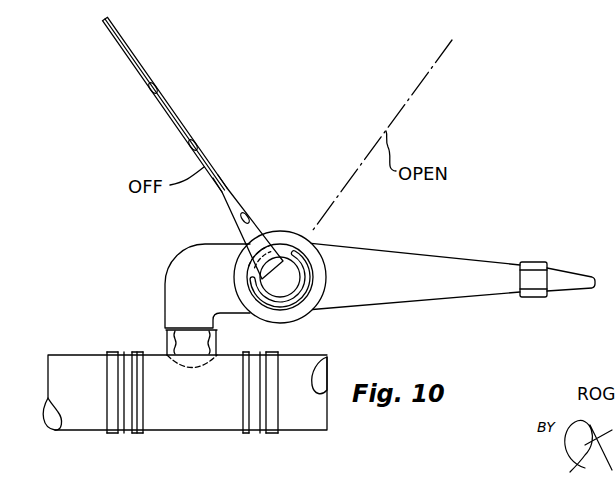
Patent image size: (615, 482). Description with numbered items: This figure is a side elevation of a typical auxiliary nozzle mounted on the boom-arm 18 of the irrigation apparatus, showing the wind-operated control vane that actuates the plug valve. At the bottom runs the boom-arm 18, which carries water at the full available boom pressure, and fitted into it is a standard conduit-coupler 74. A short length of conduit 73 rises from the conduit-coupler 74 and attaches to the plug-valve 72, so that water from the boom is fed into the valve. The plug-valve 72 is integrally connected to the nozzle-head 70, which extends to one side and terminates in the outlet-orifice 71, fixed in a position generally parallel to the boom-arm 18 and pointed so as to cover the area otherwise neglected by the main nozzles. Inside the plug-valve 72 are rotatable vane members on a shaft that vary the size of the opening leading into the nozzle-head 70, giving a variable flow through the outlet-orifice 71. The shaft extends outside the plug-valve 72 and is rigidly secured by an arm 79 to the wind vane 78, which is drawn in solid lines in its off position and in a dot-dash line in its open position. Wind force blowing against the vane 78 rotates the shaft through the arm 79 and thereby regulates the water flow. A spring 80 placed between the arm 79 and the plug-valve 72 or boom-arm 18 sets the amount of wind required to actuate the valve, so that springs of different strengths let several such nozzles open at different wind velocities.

The boom-arm 18 is at (90, 357).
The nozzle-head 70 is at (463, 243).
The outlet-orifice 71 is at (566, 270).
The plug-valve 72 is at (291, 321).
The conduit 73 is at (167, 338).
The conduit-coupler 74 is at (178, 427).
The vane 78 is at (128, 50).
The arm 79 is at (235, 188).
The spring 80 is at (313, 272).